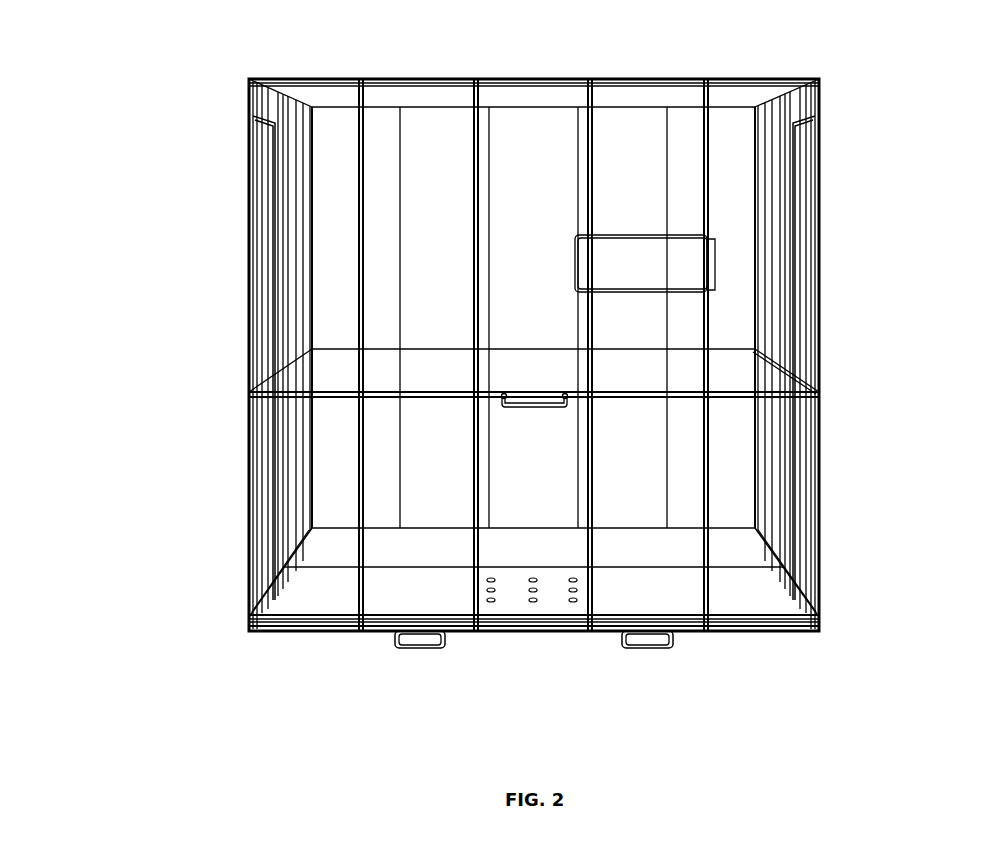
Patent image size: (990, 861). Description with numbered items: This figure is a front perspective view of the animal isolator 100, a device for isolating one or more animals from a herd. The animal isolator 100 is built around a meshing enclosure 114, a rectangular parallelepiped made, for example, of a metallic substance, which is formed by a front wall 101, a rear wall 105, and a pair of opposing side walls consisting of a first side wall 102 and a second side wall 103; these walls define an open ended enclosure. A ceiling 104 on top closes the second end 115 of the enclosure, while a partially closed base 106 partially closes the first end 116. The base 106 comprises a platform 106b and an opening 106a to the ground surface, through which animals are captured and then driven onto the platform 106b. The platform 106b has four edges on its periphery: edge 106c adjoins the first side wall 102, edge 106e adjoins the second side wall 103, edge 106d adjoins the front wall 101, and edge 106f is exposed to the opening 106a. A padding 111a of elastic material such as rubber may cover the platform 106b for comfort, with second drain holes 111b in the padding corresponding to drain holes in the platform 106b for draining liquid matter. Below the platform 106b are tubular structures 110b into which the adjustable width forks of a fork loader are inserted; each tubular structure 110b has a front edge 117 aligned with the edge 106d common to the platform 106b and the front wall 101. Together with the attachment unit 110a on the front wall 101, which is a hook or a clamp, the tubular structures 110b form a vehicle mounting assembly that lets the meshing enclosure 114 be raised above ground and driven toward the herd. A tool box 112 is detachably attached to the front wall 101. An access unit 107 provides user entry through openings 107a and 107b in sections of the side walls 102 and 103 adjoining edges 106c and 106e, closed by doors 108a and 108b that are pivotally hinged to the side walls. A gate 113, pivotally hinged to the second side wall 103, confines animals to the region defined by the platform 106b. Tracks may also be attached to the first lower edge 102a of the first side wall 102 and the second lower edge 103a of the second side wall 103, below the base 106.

The animal isolator 100 is at (866, 76).
The front wall 101 is at (357, 161).
The first side wall 102 is at (247, 268).
The first lower edge 102a is at (303, 533).
The second side wall 103 is at (817, 268).
The second lower edge 103a is at (764, 531).
The ceiling 104 is at (500, 77).
The rear wall 105 is at (552, 143).
The partially closed base 106 is at (252, 634).
The opening 106a is at (325, 547).
The platform 106b is at (758, 601).
The edge 106c is at (258, 598).
The edge 106d is at (360, 628).
The edge 106e is at (797, 587).
The edge 106f is at (746, 566).
The access unit 107 is at (238, 133).
The opening 107a is at (257, 215).
The opening 107b is at (797, 214).
The door 108a is at (265, 108).
The door 108b is at (807, 104).
The attachment unit 110a is at (547, 399).
The tubular structures 110b is at (405, 637).
The padding 111a is at (506, 605).
The second drain holes 111b is at (533, 605).
The tool box 112 is at (682, 289).
The gate 113 is at (787, 373).
The meshing enclosure 114 is at (222, 355).
The second end 115 is at (745, 74).
The first end 116 is at (268, 580).
The front edge 117 is at (435, 638).